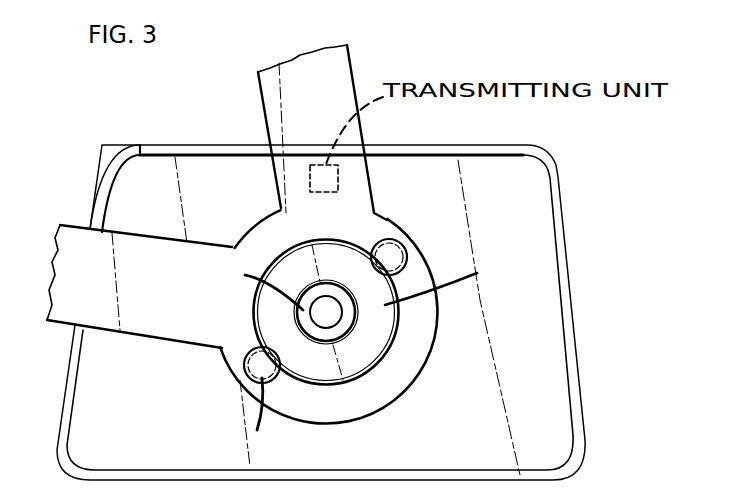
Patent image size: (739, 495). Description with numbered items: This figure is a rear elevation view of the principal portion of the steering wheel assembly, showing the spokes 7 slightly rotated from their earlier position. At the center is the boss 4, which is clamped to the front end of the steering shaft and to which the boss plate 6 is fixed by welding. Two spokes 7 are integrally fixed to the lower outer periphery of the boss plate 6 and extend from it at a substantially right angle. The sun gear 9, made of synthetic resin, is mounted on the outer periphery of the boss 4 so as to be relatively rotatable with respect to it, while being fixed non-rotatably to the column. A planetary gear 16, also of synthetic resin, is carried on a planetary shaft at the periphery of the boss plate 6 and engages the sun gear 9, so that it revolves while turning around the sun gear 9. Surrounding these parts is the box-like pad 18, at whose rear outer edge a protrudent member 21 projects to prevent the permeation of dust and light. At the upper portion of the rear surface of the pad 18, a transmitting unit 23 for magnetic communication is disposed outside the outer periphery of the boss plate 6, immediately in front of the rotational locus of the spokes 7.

The boss 4 is at (307, 297).
The boss plate 6 is at (436, 317).
The spokes 7 is at (173, 250).
The sun gear 9 is at (253, 320).
The planetary gear 16 is at (408, 255).
The pad 18 is at (435, 163).
The protrudent member 21 is at (478, 147).
The transmitting unit 23 is at (338, 173).